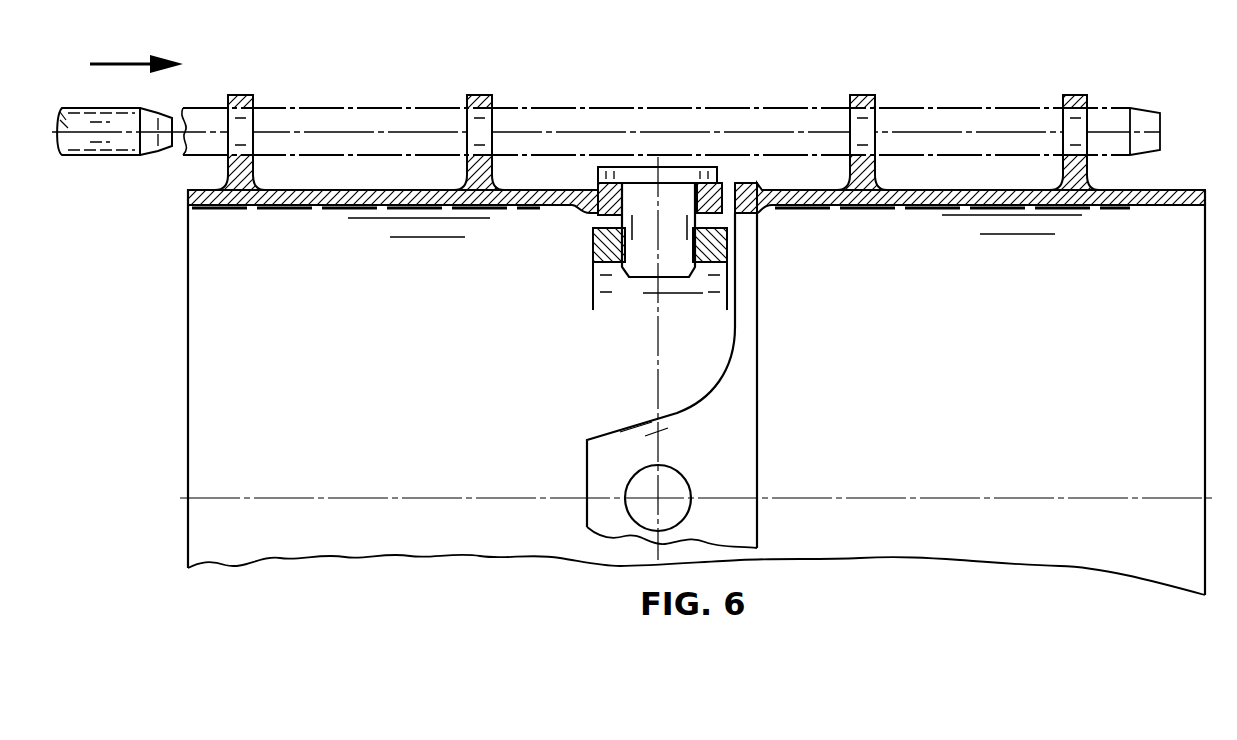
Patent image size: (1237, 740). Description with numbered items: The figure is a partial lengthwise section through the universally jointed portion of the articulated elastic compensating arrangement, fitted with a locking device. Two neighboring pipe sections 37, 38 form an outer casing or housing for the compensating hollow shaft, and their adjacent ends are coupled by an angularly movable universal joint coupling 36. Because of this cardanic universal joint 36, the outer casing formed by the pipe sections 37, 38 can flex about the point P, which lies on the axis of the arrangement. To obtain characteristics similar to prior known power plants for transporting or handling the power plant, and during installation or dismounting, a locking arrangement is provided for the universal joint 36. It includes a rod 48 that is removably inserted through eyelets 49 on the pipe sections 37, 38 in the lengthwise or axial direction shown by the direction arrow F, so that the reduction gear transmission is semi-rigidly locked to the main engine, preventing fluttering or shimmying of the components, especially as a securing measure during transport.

The universal joint coupling 36 is at (657, 398).
The pipe section 37 is at (344, 190).
The pipe section 38 is at (953, 190).
The rod 48 is at (121, 142).
The eyelets 49 is at (237, 146).
The point P is at (660, 496).
The direction arrow F is at (117, 64).